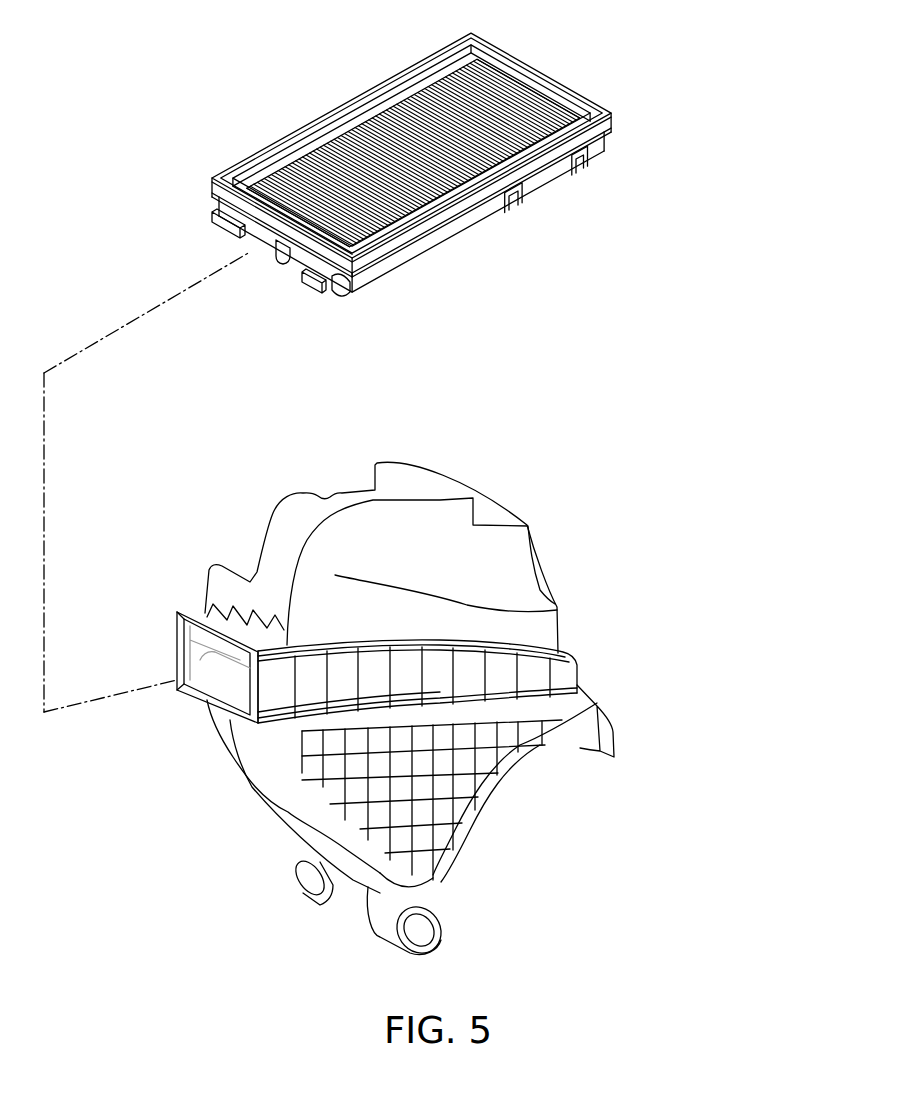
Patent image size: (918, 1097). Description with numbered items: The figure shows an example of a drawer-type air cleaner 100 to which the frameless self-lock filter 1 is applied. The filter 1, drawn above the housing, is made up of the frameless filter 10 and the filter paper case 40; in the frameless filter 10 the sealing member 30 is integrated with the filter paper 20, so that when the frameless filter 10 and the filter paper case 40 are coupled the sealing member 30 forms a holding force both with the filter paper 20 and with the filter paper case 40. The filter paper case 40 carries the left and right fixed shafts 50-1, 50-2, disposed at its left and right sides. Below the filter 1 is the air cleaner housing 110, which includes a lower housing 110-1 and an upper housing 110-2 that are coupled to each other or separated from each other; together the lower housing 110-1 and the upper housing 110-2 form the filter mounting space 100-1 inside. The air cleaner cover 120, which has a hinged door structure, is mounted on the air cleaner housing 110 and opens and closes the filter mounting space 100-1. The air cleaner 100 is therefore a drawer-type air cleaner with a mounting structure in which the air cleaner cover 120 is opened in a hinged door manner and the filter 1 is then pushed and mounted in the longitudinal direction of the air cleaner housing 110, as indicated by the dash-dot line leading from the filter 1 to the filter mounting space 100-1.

The filter 1 is at (237, 104).
The frameless filter 10 is at (342, 48).
The filter paper 20 is at (345, 133).
The sealing member 30 is at (307, 132).
The filter paper case 40 is at (292, 257).
The left fixed shaft 50-1 is at (215, 222).
The right fixed shaft 50-2 is at (310, 277).
The air cleaner 100 is at (604, 507).
The filter mounting space 100-1 is at (243, 683).
The air cleaner housing 110 is at (757, 603).
The lower housing 110-1 is at (597, 703).
The upper housing 110-2 is at (438, 617).
The air cleaner cover 120 is at (200, 637).